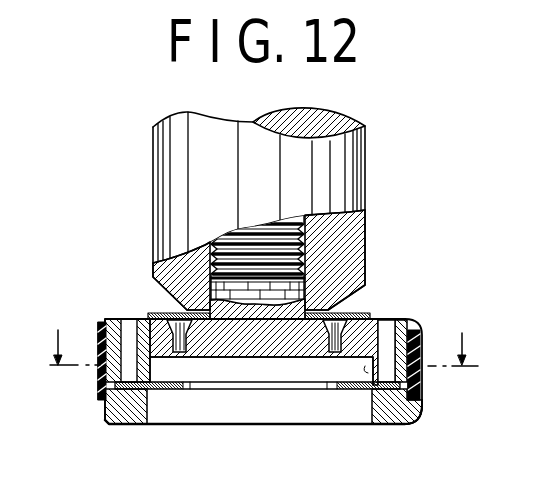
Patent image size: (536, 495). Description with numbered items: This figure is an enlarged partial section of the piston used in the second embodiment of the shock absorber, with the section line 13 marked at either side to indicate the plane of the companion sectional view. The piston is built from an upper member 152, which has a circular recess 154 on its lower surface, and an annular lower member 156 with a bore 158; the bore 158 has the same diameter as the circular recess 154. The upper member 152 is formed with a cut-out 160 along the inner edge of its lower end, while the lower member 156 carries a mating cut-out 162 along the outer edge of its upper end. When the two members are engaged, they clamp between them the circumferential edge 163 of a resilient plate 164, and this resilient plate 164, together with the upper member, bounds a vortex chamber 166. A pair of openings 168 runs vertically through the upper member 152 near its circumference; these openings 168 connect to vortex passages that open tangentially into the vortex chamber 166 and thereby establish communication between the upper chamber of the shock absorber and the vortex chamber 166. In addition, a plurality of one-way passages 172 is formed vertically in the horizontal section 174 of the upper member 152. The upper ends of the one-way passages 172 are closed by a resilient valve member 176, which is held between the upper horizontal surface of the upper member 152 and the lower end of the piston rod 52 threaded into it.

The section line 13- 13 is at (262, 335).
The piston rod 52 is at (337, 173).
The upper member 152 is at (100, 317).
The circular recess 154 is at (422, 382).
The lower member 156 is at (110, 423).
The bore 158 is at (145, 410).
The cut-out 160 is at (102, 392).
The cut-out 162 is at (419, 421).
The circumferential edge 163 is at (403, 428).
The resilient plate 164 is at (173, 390).
The vortex chamber 166 is at (233, 372).
The openings 168 is at (390, 343).
The one-way passages 172 is at (138, 317).
The horizontal section 174 is at (308, 338).
The resilient valve member 176 is at (167, 317).